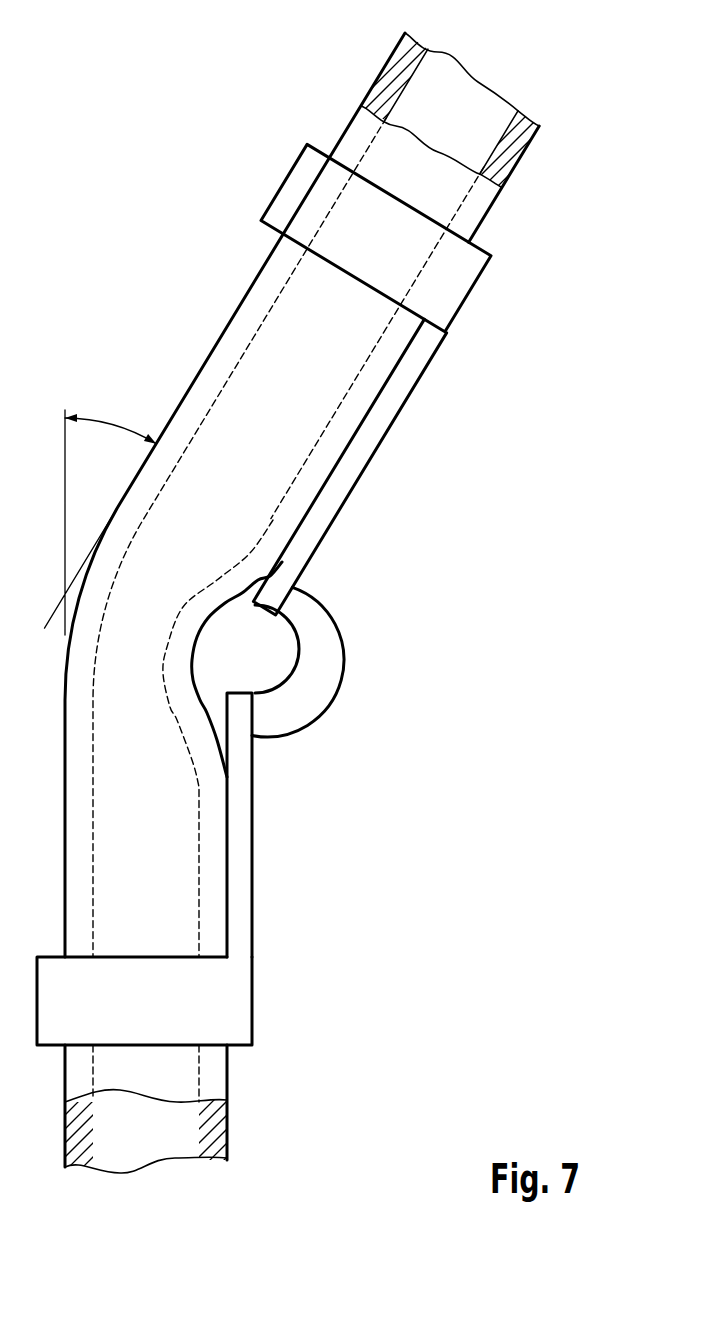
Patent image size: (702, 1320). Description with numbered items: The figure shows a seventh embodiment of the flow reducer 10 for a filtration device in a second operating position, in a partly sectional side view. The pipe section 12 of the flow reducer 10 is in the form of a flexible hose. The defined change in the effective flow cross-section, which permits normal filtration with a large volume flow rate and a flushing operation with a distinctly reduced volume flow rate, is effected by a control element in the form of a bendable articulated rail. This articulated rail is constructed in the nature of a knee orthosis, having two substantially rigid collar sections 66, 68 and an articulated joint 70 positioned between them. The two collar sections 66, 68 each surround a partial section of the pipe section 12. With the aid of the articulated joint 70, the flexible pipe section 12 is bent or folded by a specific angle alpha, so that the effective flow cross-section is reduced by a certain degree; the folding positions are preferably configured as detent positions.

The flow reducer 10 is at (134, 153).
The pipe section 12 is at (333, 370).
The collar section 66 is at (240, 1000).
The collar section 68 is at (458, 283).
The articulated joint 70 is at (322, 688).